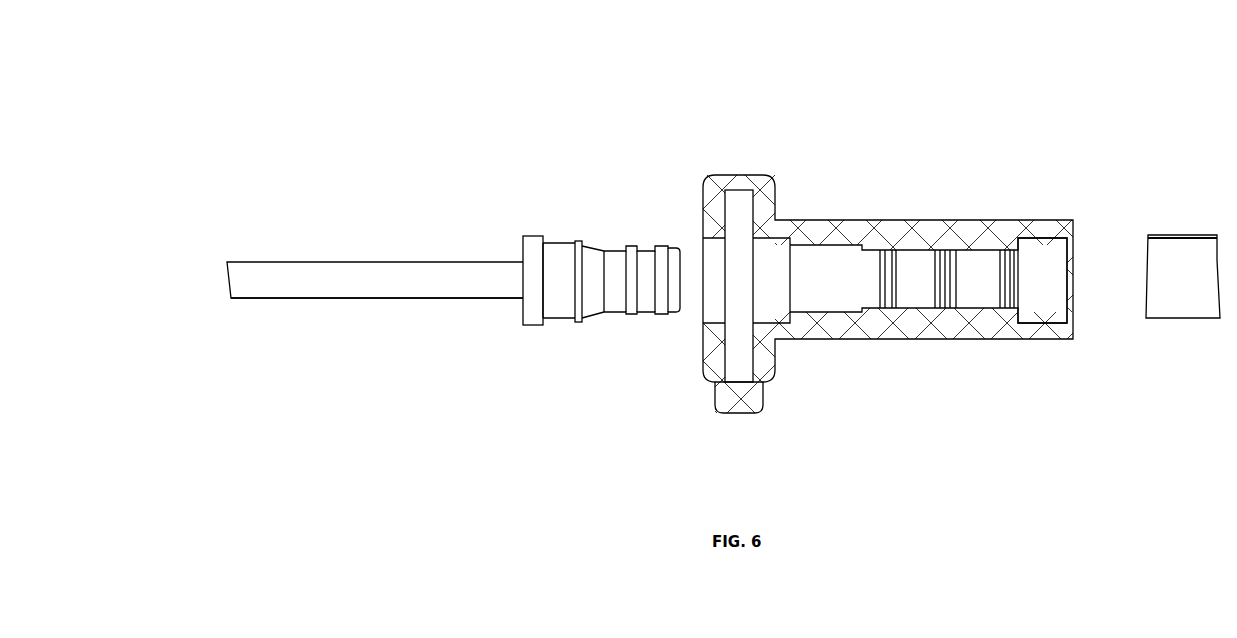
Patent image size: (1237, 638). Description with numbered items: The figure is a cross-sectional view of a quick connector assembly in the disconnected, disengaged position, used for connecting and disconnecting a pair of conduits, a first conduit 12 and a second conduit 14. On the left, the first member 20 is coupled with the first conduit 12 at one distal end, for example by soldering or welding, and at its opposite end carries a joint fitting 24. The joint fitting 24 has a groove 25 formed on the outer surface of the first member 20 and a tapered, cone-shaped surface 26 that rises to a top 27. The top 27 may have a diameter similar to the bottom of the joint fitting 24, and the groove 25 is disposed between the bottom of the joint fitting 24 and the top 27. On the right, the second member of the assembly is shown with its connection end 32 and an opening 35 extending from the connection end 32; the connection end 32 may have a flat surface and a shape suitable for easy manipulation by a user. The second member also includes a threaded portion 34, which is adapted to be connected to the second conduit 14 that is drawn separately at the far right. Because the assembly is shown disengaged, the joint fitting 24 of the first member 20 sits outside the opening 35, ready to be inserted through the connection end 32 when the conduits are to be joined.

The first conduit 12 is at (375, 294).
The second conduit 14 is at (1178, 272).
The first member 20 is at (410, 290).
The joint fitting 24 is at (524, 242).
The groove 25 is at (556, 324).
The tapered surface 26 is at (596, 240).
The top 27 is at (576, 238).
The connection end 32 is at (831, 254).
The threaded portion 34 is at (1042, 240).
The opening 35 is at (710, 316).